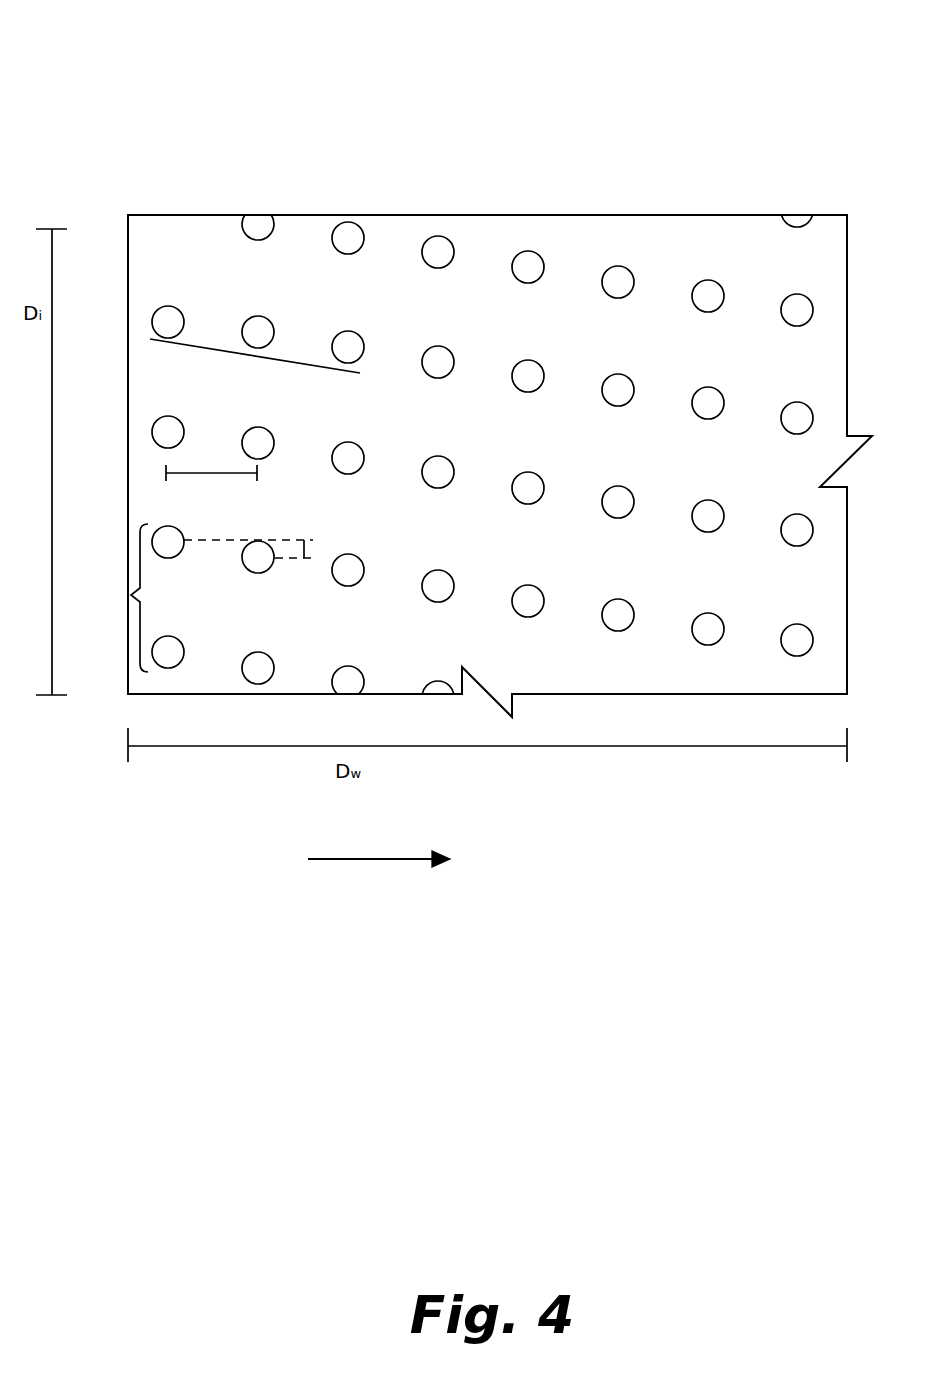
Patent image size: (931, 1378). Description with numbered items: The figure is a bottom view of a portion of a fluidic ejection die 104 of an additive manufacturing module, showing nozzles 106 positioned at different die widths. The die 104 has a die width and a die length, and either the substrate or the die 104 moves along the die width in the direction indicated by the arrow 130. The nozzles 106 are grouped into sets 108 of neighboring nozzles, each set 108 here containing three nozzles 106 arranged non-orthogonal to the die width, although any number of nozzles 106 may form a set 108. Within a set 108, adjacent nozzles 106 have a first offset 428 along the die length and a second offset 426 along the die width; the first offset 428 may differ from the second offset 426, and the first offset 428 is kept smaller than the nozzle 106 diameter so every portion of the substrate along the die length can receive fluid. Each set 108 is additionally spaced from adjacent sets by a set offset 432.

The fluidic ejection die 104 is at (216, 89).
The nozzle 106 is at (342, 223).
The set of neighboring nozzles 108 is at (253, 357).
The second offset 426 is at (203, 473).
The first offset 428 is at (304, 560).
The set offset 432 is at (131, 595).
The arrow 130 is at (373, 860).